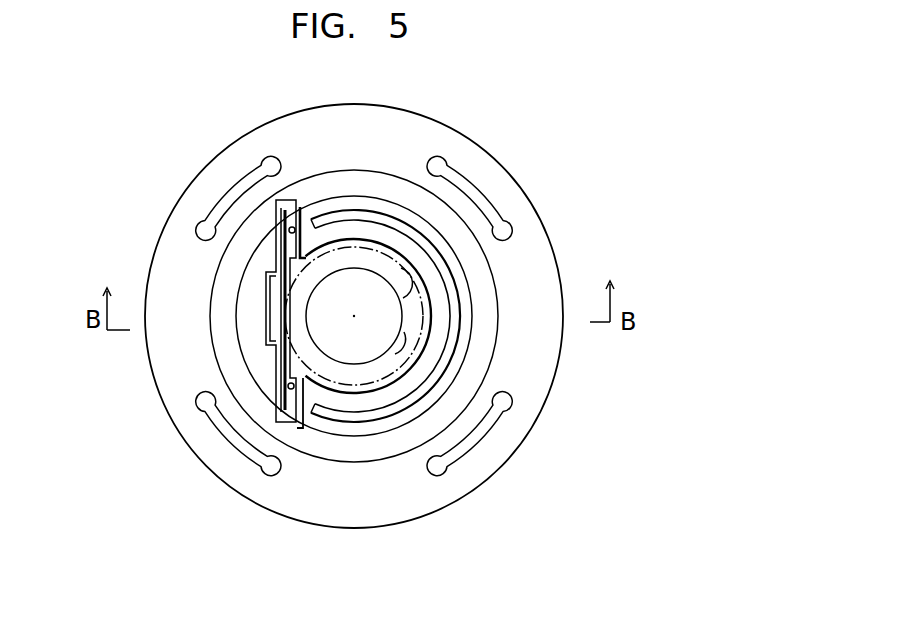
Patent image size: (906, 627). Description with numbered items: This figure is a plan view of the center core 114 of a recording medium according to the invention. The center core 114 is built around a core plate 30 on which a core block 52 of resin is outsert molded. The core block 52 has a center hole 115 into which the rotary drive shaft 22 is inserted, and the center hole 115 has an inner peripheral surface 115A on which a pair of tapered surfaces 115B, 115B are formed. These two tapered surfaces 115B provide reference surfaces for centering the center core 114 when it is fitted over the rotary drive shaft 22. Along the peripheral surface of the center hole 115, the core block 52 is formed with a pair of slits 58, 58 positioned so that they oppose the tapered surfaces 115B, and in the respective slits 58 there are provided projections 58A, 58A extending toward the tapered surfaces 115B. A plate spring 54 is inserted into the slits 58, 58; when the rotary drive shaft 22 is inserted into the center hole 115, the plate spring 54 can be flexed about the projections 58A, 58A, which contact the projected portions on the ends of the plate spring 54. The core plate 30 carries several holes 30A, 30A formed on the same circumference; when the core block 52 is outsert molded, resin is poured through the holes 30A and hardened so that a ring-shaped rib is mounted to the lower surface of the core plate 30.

The rotary drive shaft 22 is at (372, 238).
The core plate 30 is at (545, 373).
The holes 30A is at (268, 158).
The core block 52 is at (203, 326).
The plate spring 54 is at (275, 268).
The slits 58 is at (276, 222).
The projections 58A is at (282, 244).
The center core 114 is at (546, 95).
The center hole 115 is at (366, 388).
The inner peripheral surface 115A is at (323, 388).
The tapered surfaces 115B is at (400, 336).